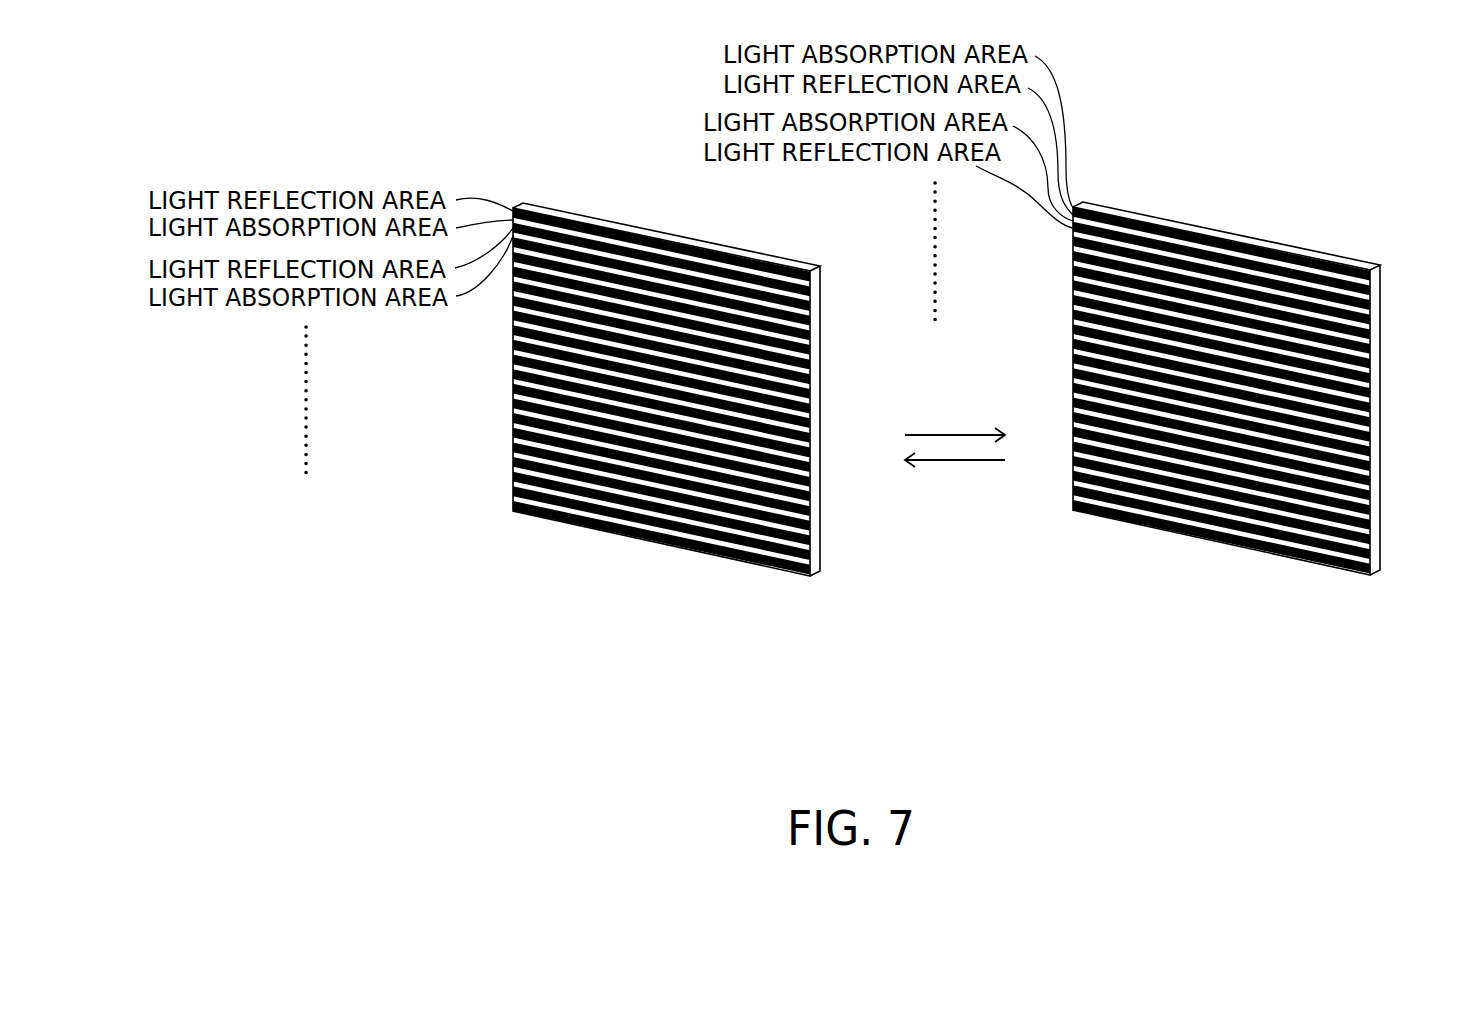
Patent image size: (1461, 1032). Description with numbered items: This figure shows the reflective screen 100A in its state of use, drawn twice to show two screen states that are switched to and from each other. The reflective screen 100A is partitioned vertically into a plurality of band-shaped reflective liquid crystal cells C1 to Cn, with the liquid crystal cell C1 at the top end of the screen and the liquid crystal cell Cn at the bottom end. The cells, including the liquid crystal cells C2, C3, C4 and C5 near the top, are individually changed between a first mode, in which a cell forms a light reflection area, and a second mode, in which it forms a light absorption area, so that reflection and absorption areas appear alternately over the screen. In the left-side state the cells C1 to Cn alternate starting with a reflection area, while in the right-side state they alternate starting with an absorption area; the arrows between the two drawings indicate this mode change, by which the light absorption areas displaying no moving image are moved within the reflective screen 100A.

The reflective screen 100A is at (688, 240).
The liquid crystal cell C1 is at (772, 262).
The liquid crystal cell C2 is at (804, 282).
The liquid crystal cell C3 is at (804, 292).
The liquid crystal cell C4 is at (806, 294).
The liquid crystal cell C5 is at (808, 296).
The liquid crystal cell Cn is at (860, 393).